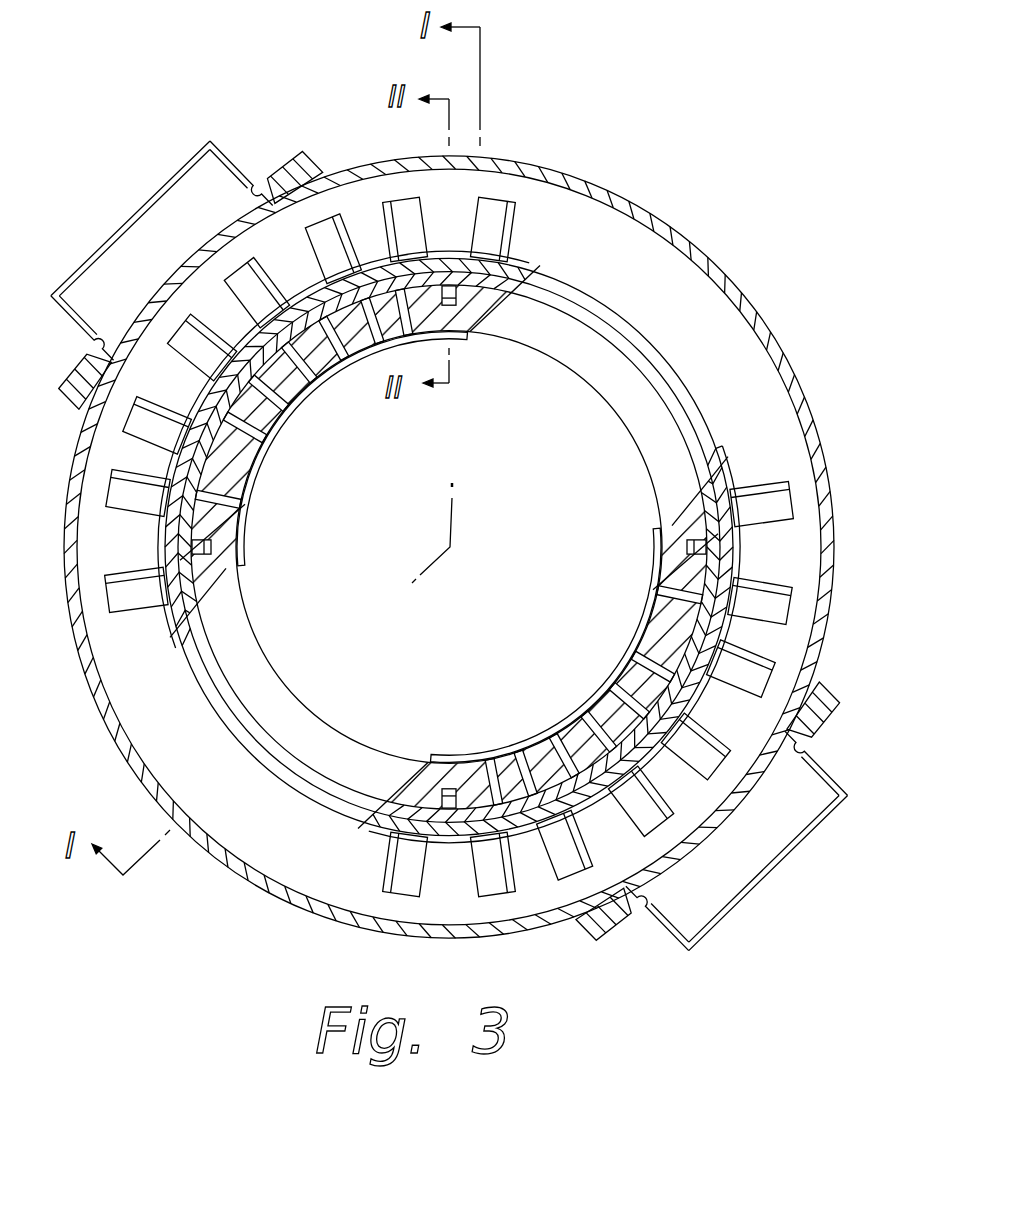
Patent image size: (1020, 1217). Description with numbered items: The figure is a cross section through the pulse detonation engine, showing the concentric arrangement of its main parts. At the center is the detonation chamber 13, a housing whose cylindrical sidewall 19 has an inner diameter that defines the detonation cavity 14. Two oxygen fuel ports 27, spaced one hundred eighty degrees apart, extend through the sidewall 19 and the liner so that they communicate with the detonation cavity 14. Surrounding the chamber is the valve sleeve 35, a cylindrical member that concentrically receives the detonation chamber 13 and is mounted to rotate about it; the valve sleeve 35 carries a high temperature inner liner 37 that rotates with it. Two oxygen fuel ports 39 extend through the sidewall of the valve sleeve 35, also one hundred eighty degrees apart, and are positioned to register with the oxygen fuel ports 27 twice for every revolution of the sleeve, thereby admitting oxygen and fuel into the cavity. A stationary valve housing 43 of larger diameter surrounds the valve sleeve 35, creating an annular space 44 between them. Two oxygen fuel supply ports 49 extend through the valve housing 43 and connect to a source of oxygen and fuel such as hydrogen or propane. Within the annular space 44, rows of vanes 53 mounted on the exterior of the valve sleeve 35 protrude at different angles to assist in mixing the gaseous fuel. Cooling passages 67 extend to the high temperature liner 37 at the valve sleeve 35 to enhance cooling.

The detonation chamber 13 is at (486, 305).
The detonation cavity 14 is at (332, 467).
The sidewall 19 is at (218, 575).
The oxygen fuel ports 27 is at (688, 500).
The valve sleeve 35 is at (728, 484).
The high temperature inner liner 37 is at (716, 560).
The oxygen fuel ports 39 is at (713, 452).
The valve housing 43 is at (755, 312).
The annular space 44 is at (695, 323).
The oxygen fuel supply ports 49 is at (807, 760).
The vanes 53 is at (758, 690).
The cooling passages 67 is at (570, 750).